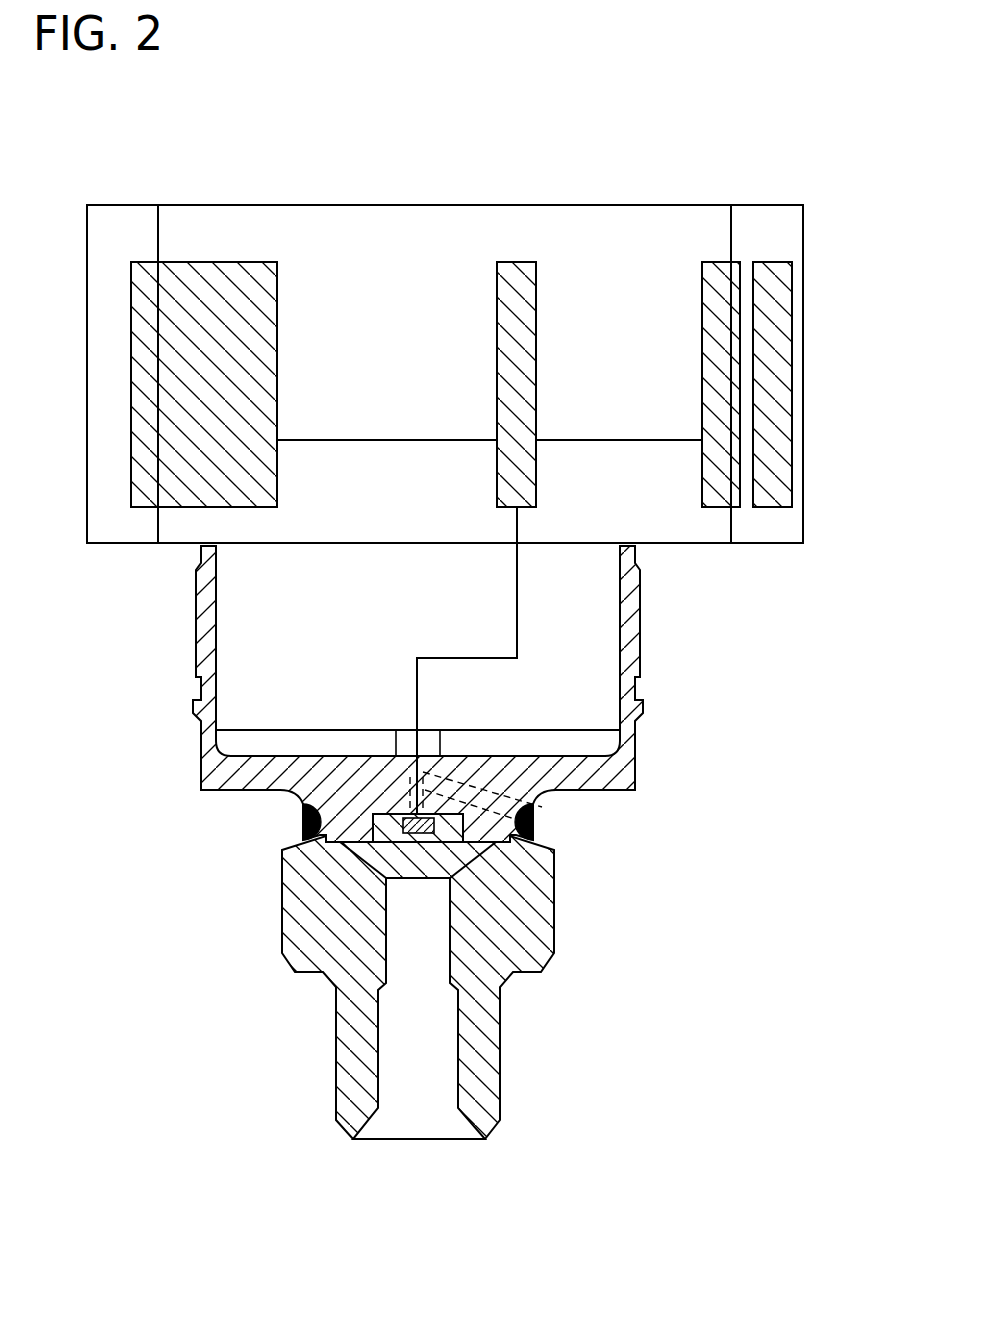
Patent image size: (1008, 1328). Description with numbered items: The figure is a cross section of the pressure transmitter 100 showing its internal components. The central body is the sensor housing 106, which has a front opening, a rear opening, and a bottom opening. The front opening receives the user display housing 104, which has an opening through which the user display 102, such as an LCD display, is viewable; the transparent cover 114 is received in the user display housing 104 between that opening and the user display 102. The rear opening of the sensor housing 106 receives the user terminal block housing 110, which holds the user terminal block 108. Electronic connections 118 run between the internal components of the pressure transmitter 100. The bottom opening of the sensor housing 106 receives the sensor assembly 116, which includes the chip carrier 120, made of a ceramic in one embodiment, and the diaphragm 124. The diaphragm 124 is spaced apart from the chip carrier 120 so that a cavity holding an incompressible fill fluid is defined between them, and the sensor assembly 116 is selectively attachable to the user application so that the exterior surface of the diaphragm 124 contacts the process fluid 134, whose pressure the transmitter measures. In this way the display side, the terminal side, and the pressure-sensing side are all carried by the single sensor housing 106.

The pressure transmitter 100 is at (186, 1095).
The user display 102 is at (702, 308).
The user display housing 104 is at (783, 528).
The sensor housing 106 is at (497, 285).
The user terminal block 108 is at (277, 348).
The user terminal block housing 110 is at (115, 228).
The transparent cover 114 is at (792, 318).
The sensor assembly 116 is at (186, 778).
The electronic connections 118 is at (413, 440).
The chip carrier 120 is at (432, 838).
The diaphragm 124 is at (340, 856).
The process fluid 134 is at (433, 953).